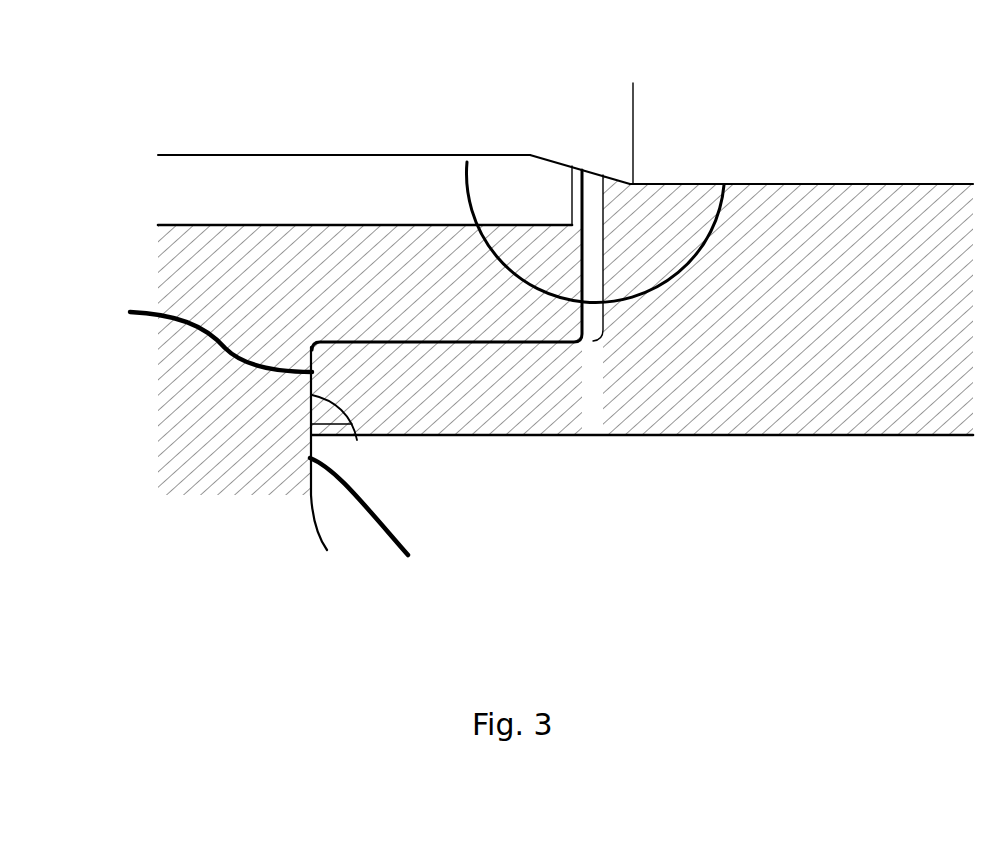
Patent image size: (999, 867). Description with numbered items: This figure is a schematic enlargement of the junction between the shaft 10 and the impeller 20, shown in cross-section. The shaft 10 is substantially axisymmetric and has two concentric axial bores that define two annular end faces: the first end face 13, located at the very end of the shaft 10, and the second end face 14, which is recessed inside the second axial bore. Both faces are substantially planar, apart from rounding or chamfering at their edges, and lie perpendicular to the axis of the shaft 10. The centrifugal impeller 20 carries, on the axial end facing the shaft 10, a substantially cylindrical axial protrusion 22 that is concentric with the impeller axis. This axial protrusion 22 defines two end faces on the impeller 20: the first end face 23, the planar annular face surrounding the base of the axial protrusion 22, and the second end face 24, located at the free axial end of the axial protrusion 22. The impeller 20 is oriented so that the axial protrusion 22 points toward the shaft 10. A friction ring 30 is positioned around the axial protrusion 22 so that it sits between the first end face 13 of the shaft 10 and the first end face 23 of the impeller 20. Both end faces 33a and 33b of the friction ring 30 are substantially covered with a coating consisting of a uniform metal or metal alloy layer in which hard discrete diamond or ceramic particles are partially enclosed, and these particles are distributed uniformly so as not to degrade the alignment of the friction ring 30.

The shaft 10 is at (827, 540).
The impeller 20 is at (220, 540).
The second end face 14 is at (724, 185).
The second end face 24 is at (467, 162).
The axial protrusion 22 is at (443, 295).
The first end face 23 is at (312, 410).
The first end face 13 is at (357, 440).
The friction ring 30 is at (344, 462).
The end face of the friction ring 33a is at (376, 527).
The end face of the friction ring 33b is at (189, 328).